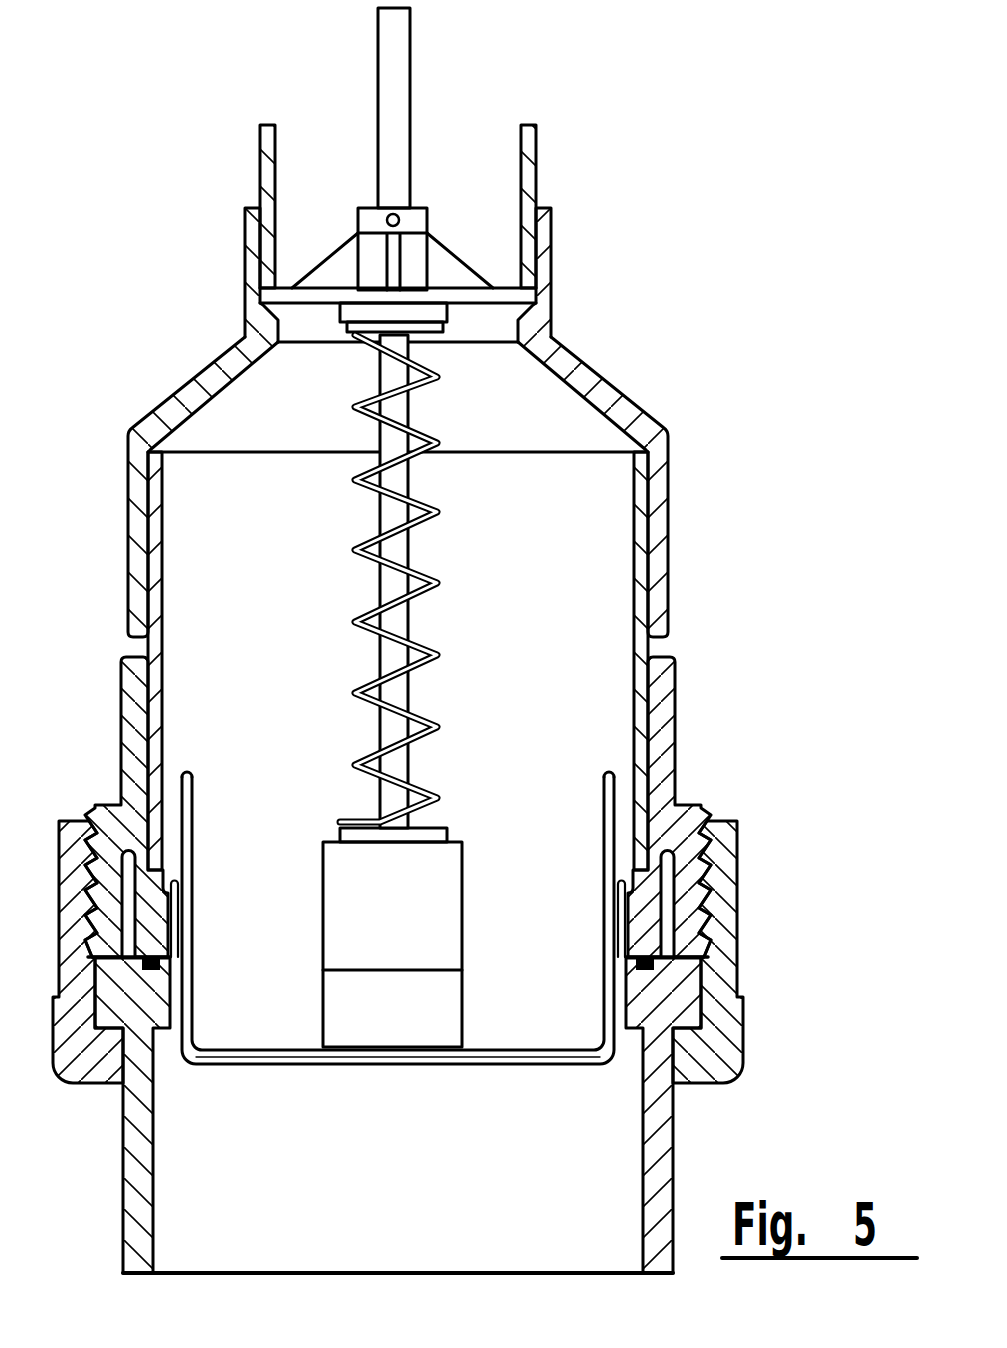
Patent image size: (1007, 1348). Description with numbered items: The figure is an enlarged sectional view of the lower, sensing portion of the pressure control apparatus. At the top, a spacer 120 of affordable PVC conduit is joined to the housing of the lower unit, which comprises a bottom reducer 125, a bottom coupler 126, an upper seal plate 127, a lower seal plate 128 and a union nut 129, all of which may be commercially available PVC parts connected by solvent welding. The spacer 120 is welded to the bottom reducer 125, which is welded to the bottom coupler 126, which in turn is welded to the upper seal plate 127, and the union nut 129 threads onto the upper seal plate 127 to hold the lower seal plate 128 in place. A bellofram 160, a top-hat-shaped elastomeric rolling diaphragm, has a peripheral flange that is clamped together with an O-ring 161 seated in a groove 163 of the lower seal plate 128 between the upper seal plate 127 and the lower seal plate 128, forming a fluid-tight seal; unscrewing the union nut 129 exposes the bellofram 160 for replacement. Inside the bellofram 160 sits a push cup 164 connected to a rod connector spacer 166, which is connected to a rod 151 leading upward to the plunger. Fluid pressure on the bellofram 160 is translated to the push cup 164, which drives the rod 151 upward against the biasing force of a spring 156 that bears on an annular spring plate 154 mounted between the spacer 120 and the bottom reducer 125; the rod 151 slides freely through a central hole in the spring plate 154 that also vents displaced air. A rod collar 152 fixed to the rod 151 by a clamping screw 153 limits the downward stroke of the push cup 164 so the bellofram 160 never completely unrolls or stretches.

The rod 151 is at (402, 62).
The rod collar 152 is at (427, 218).
The clamping screw 153 is at (399, 216).
The spring plate 154 is at (340, 268).
The spacer 120 is at (530, 175).
The bottom reducer 125 is at (555, 273).
The bottom coupler 126 is at (640, 478).
The upper seal plate 127 is at (672, 690).
The spring 156 is at (436, 583).
The push cup 164 is at (194, 790).
The bellofram 160 is at (617, 872).
The union nut 129 is at (738, 860).
The rod connector spacer 166 is at (408, 898).
The O-ring 161 is at (654, 958).
The groove 163 is at (633, 960).
The lower seal plate 128 is at (670, 1180).